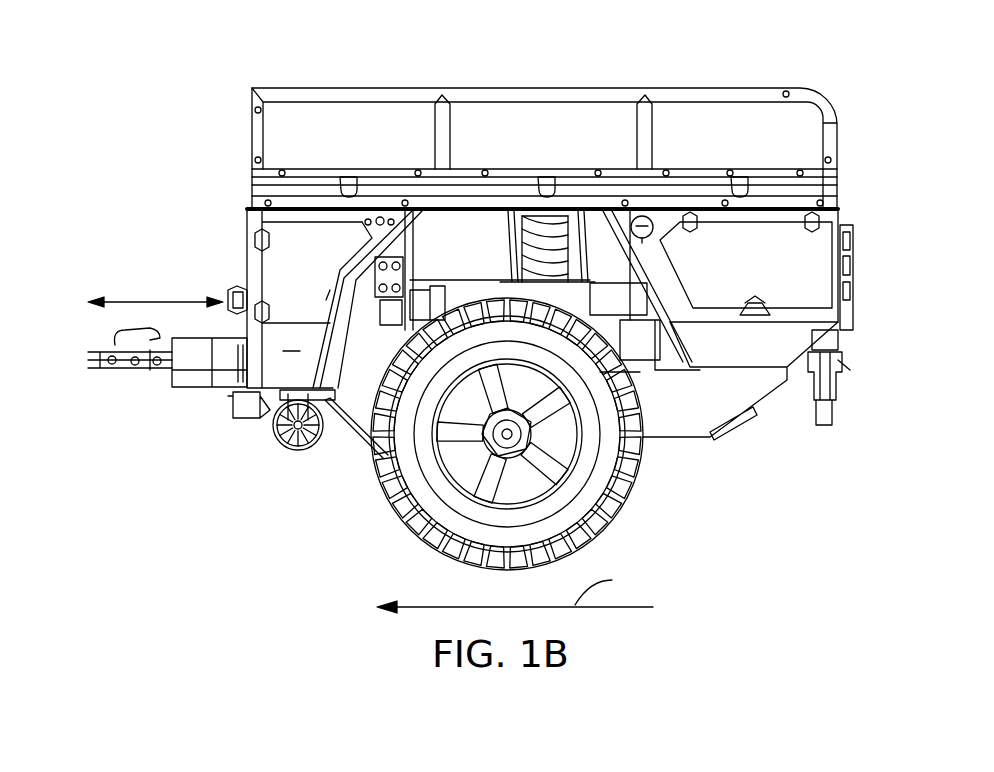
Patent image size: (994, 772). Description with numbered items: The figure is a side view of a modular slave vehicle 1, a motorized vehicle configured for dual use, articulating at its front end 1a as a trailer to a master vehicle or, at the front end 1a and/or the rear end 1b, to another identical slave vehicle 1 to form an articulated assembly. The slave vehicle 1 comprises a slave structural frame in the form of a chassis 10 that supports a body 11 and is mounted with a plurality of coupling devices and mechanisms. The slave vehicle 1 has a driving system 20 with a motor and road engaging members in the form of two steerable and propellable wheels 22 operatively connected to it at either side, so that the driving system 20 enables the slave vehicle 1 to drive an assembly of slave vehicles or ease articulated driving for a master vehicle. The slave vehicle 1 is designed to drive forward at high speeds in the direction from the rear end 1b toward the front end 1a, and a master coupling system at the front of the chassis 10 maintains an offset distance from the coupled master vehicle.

The modular slave vehicle 1 is at (791, 45).
The front end 1a is at (123, 45).
The rear end 1b is at (827, 440).
The body 11 is at (843, 215).
The chassis 10 is at (645, 365).
The steerable and propellable wheels 22 is at (600, 473).
The driving system 20 is at (350, 460).